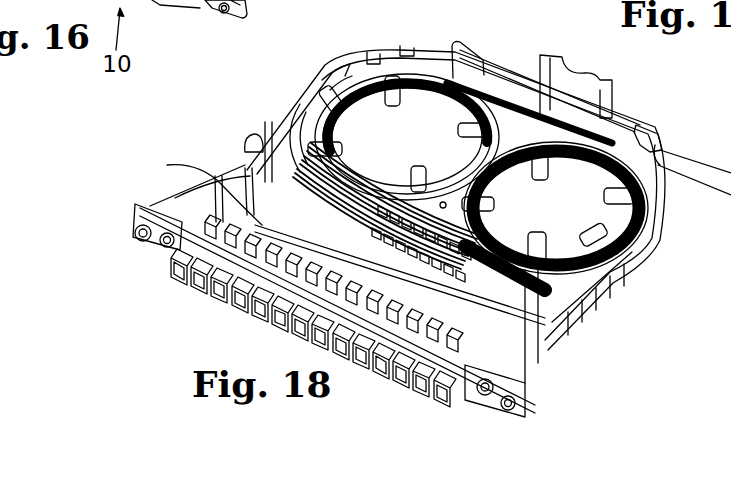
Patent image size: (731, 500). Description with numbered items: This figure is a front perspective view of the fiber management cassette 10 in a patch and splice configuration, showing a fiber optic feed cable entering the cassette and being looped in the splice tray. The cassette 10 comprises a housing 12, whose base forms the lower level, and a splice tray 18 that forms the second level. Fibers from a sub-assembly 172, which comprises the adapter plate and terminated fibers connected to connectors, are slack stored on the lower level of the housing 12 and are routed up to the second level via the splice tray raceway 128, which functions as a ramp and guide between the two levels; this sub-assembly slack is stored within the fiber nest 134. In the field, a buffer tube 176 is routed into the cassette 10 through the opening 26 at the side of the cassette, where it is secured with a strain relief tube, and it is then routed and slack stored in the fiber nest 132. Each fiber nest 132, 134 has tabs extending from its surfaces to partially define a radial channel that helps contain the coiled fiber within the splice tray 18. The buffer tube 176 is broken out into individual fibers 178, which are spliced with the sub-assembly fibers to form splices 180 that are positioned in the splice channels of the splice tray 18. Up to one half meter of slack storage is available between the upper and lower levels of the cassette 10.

The fiber management cassette 10 is at (237, 126).
The housing 12 is at (663, 235).
The splice tray 18 is at (525, 333).
The opening 26 is at (690, 167).
The raceway 128 is at (342, 62).
The fiber nest 132 is at (483, 68).
The fiber nest 134 is at (633, 131).
The sub-assembly 172 is at (571, 188).
The buffer tube 176 is at (367, 112).
The individual fibers 178 is at (195, 188).
The splices 180 is at (228, 296).